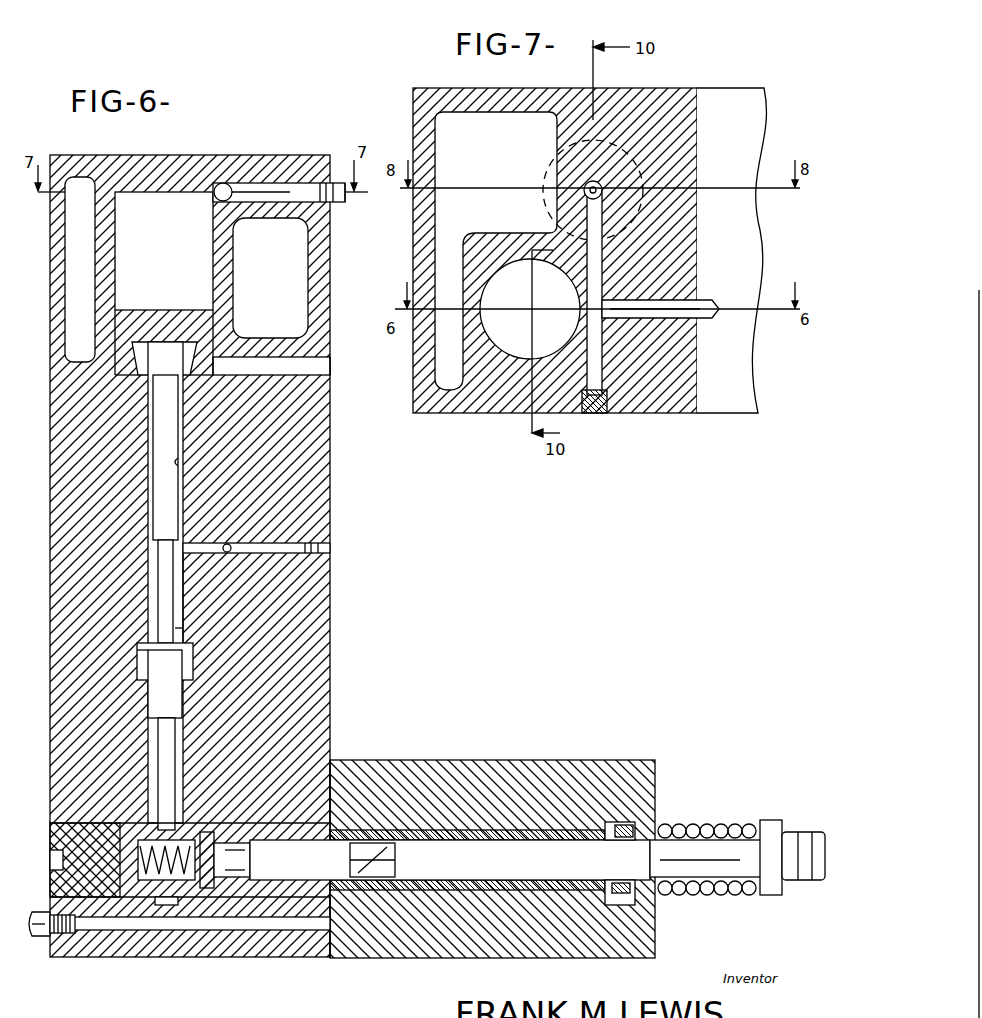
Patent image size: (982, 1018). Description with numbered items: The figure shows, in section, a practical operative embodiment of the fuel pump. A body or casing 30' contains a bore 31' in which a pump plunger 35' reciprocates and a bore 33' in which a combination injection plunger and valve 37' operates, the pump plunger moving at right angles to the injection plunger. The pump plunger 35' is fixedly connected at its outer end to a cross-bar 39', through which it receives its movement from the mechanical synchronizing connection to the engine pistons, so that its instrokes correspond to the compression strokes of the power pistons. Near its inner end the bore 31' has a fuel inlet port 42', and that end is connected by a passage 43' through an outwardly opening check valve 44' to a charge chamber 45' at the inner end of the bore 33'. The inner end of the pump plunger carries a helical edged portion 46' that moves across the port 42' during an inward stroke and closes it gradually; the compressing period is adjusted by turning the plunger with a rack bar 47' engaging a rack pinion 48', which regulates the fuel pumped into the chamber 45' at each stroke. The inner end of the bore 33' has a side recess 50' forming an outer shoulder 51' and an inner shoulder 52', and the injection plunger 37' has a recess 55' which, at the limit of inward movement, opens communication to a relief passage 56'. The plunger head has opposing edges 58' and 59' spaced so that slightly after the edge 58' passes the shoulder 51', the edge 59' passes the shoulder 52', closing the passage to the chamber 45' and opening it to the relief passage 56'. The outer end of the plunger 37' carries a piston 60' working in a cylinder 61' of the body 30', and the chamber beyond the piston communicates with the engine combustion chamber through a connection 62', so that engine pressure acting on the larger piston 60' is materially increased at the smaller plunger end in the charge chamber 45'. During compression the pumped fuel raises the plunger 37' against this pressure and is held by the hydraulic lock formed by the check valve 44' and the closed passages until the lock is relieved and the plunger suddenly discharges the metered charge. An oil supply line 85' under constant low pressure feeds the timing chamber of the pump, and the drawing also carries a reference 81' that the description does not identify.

In FIG. 6, the body or casing 30' is at (352, 556).
In FIG. 7, the body or casing 30' is at (589, 275).
In FIG. 6, the bore 31' is at (467, 880).
In FIG. 6, the bore 33' is at (204, 457).
In FIG. 6, the pump plunger 35' is at (506, 860).
In FIG. 6, the combination injection plunger and valve 37' is at (164, 582).
In FIG. 6, the cross-bar 39' is at (741, 875).
In FIG. 6, the fuel inlet port 42' is at (200, 946).
In FIG. 6, the passage 43' is at (246, 837).
In FIG. 6, the check valve 44' is at (184, 833).
In FIG. 6, the charge chamber 45' is at (141, 774).
In FIG. 6, the helical edged portion 46' is at (378, 839).
In FIG. 6, the rack bar 47' is at (648, 916).
In FIG. 6, the rack pinion 48' is at (654, 818).
In FIG. 6, the side recess 50' is at (190, 661).
In FIG. 6, the outer shoulder 51' is at (123, 633).
In FIG. 6, the inner shoulder 52' is at (139, 684).
In FIG. 6, the recess 55' is at (212, 598).
In FIG. 6, the relief passage 56' is at (256, 527).
In FIG. 6, the edge 58' is at (209, 629).
In FIG. 6, the edge 59' is at (199, 701).
In FIG. 6, the piston 60' is at (164, 328).
In FIG. 6, the cylinder 61' is at (164, 251).
In FIG. 7, the cylinder 61' is at (530, 309).
In FIG. 6, the connection 62' is at (293, 213).
In FIG. 7, the connection 62' is at (650, 297).
In FIG. 7, the pin head circle 81' is at (571, 190).
In FIG. 6, the oil supply line 85' is at (154, 951).